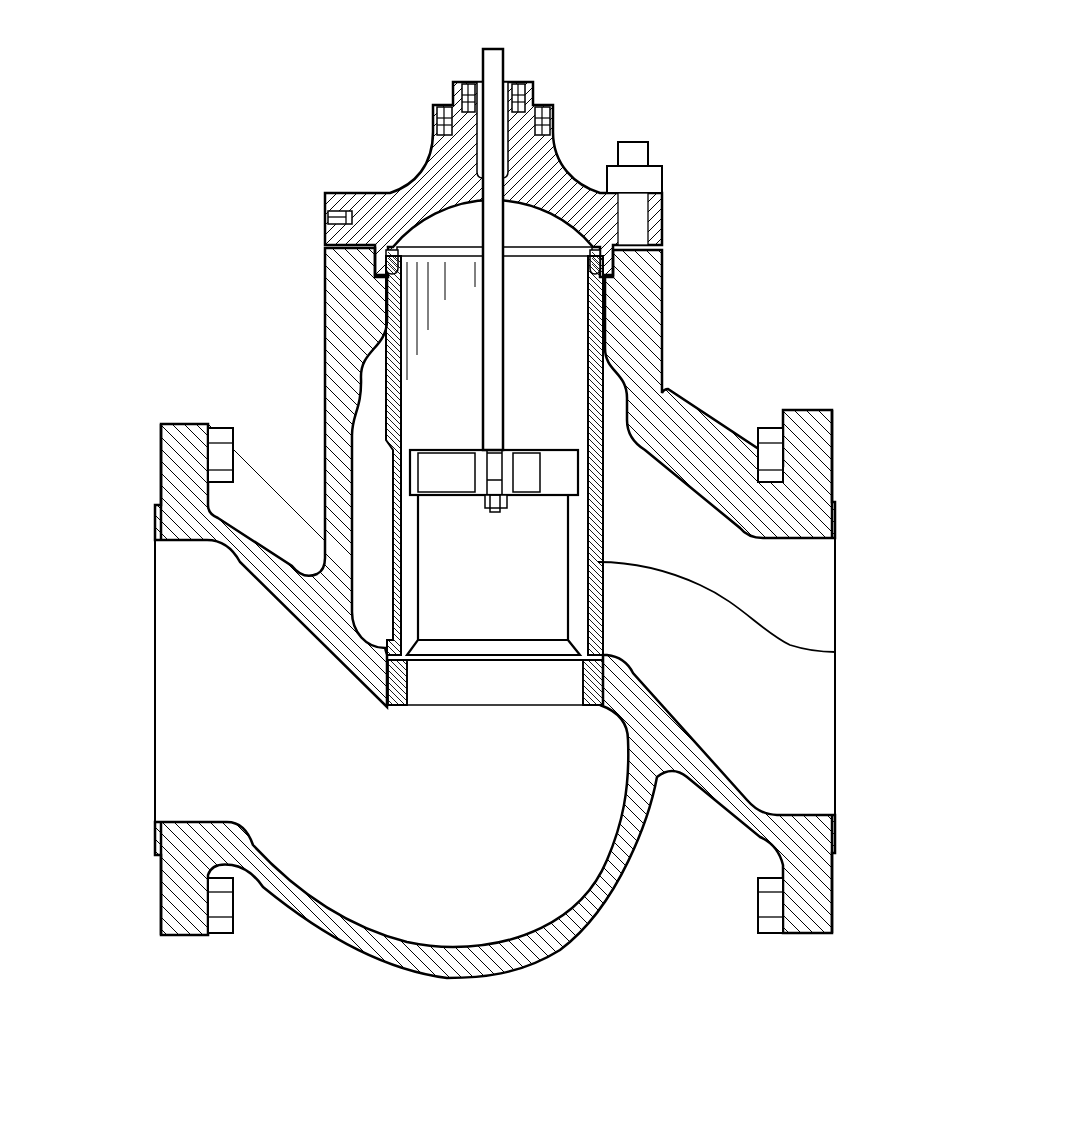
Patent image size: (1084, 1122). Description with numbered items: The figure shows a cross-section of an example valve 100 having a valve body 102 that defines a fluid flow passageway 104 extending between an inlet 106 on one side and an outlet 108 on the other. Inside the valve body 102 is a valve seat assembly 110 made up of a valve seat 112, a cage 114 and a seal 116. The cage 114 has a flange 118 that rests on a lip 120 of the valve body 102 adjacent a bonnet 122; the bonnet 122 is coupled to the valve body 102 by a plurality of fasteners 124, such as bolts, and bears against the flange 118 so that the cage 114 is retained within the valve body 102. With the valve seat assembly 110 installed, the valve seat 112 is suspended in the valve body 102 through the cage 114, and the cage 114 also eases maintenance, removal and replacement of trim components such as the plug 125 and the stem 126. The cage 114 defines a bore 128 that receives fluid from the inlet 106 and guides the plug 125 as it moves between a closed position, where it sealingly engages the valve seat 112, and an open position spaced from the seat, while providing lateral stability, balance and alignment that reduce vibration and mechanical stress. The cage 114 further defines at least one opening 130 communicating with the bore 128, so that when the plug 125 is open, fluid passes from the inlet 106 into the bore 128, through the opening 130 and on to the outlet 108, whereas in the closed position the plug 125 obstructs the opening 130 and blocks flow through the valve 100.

The valve 100 is at (724, 68).
The valve body 102 is at (656, 280).
The fluid flow passageway 104 is at (402, 888).
The inlet 106 is at (152, 590).
The outlet 108 is at (838, 592).
The valve seat assembly 110 is at (370, 460).
The valve seat 112 is at (452, 693).
The cage 114 is at (393, 393).
The seal 116 is at (384, 695).
The flange 118 is at (328, 217).
The lip 120 is at (386, 262).
The bonnet 122 is at (400, 182).
The fasteners 124 is at (648, 147).
The plug 125 is at (568, 465).
The stem 126 is at (483, 48).
The bore 128 is at (590, 335).
The opening 130 is at (850, 656).